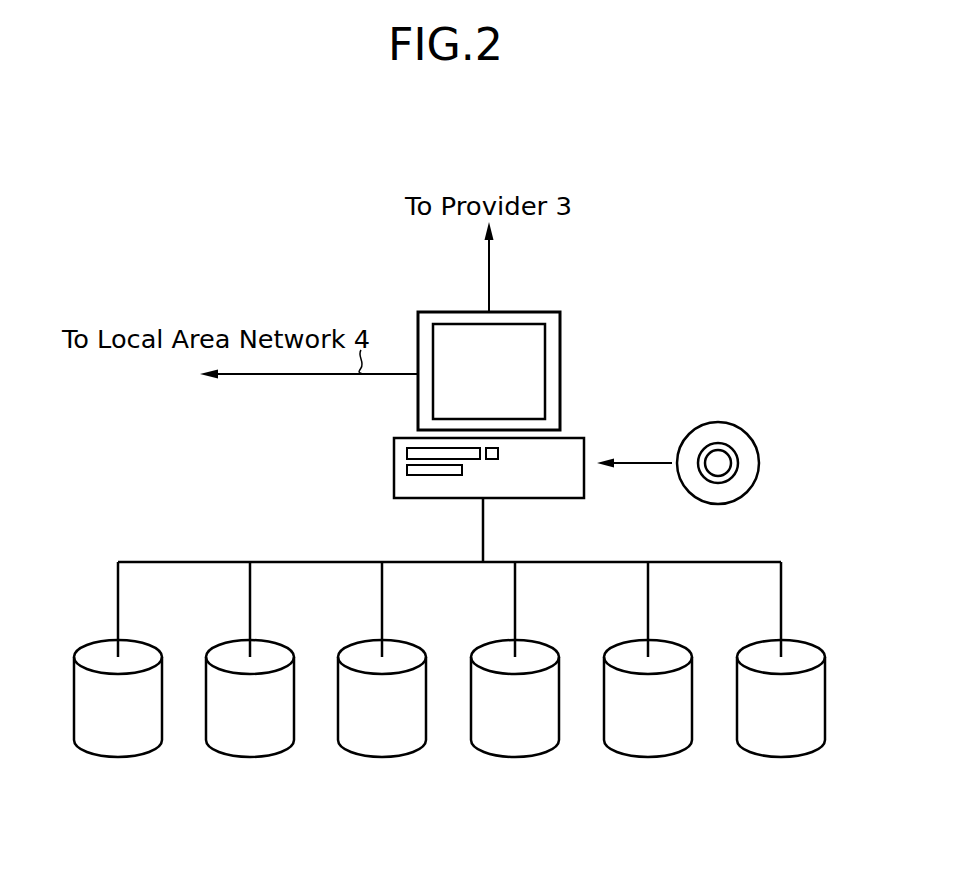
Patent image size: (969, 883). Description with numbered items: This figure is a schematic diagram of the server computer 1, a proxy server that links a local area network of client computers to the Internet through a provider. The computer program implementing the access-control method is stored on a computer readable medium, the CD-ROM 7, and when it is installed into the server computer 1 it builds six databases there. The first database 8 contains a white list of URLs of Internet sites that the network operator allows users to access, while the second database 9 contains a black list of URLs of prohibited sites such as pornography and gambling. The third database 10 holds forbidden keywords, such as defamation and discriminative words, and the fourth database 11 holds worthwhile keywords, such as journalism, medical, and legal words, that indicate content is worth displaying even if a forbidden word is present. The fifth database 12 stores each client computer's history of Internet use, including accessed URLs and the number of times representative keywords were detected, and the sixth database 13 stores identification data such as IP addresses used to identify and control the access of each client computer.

The server computer 1 is at (560, 361).
The CD-ROM 7 is at (759, 463).
The first database 8 is at (116, 757).
The second database 9 is at (248, 757).
The third database 10 is at (380, 757).
The fourth database 11 is at (513, 757).
The fifth database 12 is at (649, 757).
The sixth database 13 is at (786, 757).